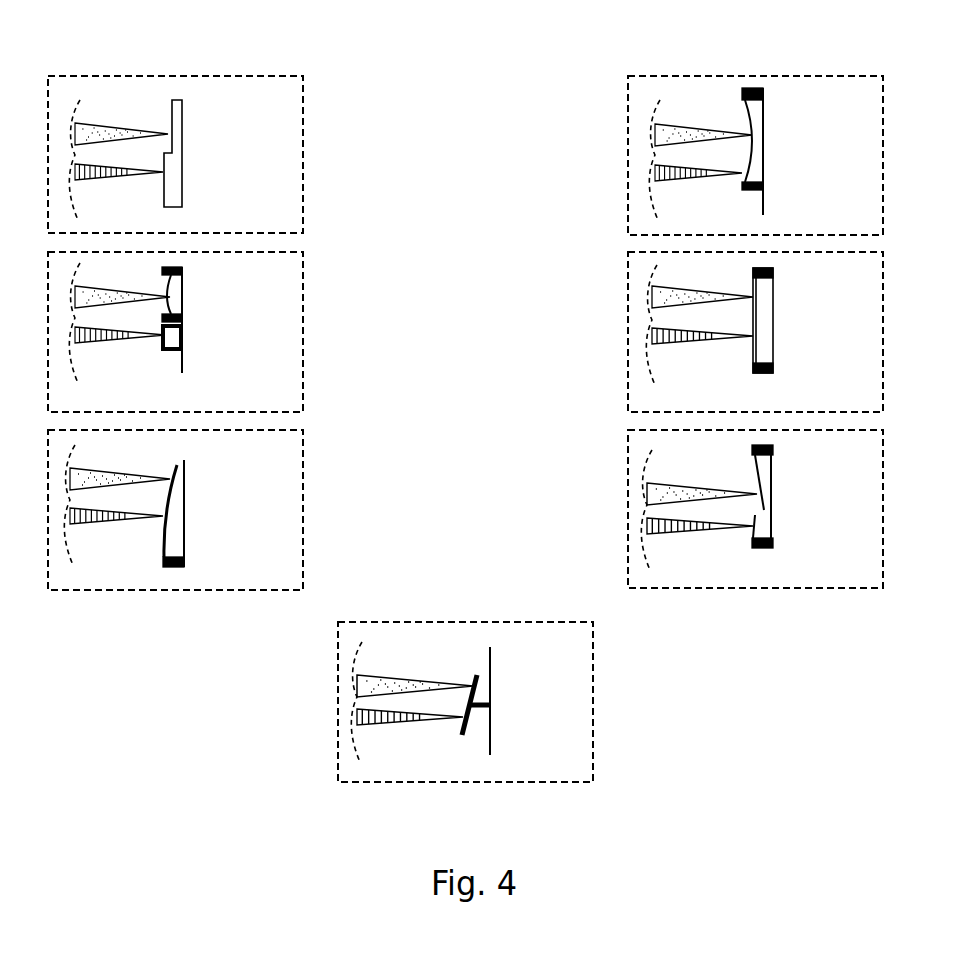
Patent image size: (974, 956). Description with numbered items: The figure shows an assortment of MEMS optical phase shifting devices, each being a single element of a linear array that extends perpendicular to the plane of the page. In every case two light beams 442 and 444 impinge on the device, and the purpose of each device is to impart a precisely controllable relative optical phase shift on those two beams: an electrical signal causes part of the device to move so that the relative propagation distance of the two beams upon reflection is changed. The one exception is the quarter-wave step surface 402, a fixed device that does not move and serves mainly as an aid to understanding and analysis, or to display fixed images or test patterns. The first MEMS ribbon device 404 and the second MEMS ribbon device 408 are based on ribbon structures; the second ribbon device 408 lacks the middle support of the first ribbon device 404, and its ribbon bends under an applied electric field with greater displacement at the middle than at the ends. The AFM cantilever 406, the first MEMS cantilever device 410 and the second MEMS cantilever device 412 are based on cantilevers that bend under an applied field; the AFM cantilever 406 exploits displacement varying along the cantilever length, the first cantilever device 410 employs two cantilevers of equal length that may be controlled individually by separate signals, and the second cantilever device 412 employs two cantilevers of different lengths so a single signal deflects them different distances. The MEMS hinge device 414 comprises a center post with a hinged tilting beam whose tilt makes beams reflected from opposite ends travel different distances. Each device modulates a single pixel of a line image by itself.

The quarter-wave step surface 402 is at (214, 127).
The MEMS ribbon device #1 404 is at (318, 355).
The AFM cantilever 406 is at (318, 535).
The MEMS ribbon device #2 408 is at (898, 183).
The MEMS cantilever device #1 410 is at (898, 355).
The MEMS cantilever device #2 412 is at (898, 535).
The MEMS hinge device 414 is at (608, 724).
The light beam 442 is at (107, 122).
The light beam 444 is at (128, 160).